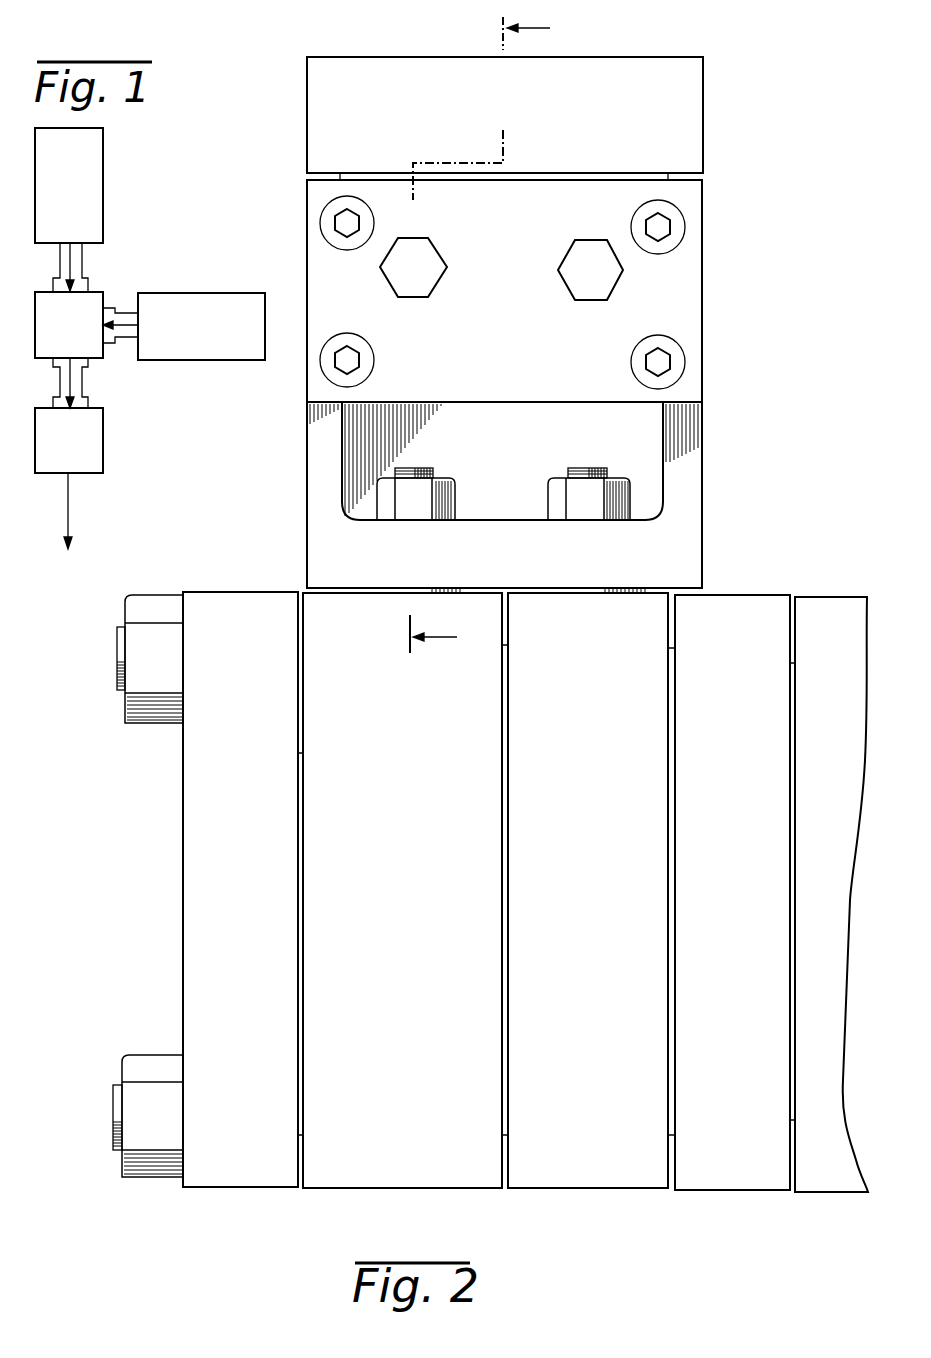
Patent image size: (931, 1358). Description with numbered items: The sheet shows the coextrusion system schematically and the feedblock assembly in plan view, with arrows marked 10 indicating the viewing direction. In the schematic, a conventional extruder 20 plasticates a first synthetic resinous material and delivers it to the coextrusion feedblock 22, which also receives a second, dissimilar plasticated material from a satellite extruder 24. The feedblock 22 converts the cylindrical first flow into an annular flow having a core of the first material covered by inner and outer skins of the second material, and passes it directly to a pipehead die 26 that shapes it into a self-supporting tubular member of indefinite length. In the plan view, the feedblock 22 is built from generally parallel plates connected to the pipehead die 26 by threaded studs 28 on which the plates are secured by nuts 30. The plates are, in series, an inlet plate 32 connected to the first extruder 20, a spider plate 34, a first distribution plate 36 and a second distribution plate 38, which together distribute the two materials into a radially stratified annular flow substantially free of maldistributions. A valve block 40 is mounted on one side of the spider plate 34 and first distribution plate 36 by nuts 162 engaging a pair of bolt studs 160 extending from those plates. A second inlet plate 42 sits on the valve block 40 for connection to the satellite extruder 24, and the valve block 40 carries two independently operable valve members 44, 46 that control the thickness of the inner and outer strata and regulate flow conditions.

In FIG. 2, the section/view line 10 is at (466, 334).
In FIG. 1, the extruder 20 is at (93, 182).
In FIG. 1, the coextrusion feedblock 22 is at (87, 350).
In FIG. 1, the satellite extruder 24 is at (172, 348).
In FIG. 1, the pipehead die 26 is at (85, 452).
In FIG. 2, the pipehead die 26 is at (830, 1083).
In FIG. 2, the threaded stud 28 is at (118, 657).
In FIG. 2, the nut 30 is at (155, 605).
In FIG. 2, the inlet plate 32 is at (188, 901).
In FIG. 2, the spider plate 34 is at (377, 1175).
In FIG. 2, the first distribution plate 36 is at (585, 1178).
In FIG. 2, the second distribution plate 38 is at (747, 1178).
In FIG. 2, the valve block 40 is at (690, 493).
In FIG. 2, the second inlet plate 42 is at (688, 100).
In FIG. 2, the valve member 44 is at (385, 267).
In FIG. 2, the valve member 46 is at (617, 282).
In FIG. 2, the bolt stud 160 is at (580, 470).
In FIG. 2, the nut 162 is at (553, 500).